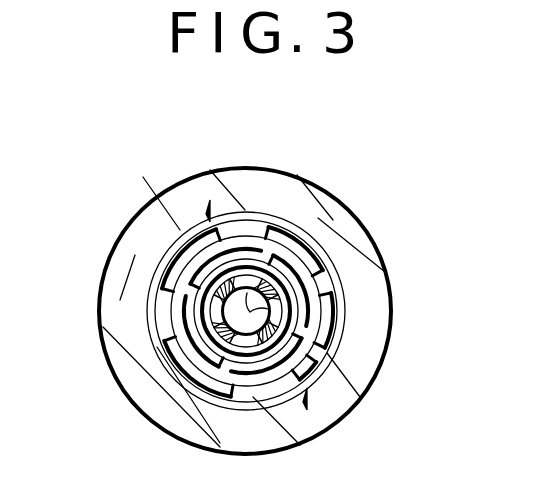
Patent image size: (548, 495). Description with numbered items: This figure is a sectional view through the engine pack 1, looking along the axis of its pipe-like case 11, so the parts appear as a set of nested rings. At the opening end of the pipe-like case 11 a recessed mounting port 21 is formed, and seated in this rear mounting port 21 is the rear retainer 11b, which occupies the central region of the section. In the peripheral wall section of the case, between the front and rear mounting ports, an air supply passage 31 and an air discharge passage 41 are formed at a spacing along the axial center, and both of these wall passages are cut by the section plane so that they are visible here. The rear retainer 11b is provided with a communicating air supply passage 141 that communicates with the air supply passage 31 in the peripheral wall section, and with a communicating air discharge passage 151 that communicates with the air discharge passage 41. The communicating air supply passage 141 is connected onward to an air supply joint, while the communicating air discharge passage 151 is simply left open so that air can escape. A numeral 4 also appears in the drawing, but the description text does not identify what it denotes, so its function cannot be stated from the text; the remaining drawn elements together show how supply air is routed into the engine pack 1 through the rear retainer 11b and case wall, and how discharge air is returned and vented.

The engine pack 1 is at (287, 215).
The hub 4 is at (372, 293).
The pipe-like case 11 is at (340, 255).
The rear retainer 11b is at (365, 332).
The recessed mounting port 21 is at (315, 282).
The air supply passage 31 is at (300, 240).
The air discharge passage 41 is at (140, 232).
The communicating air supply passage 141 is at (240, 240).
The communicating air discharge passage 151 is at (138, 262).